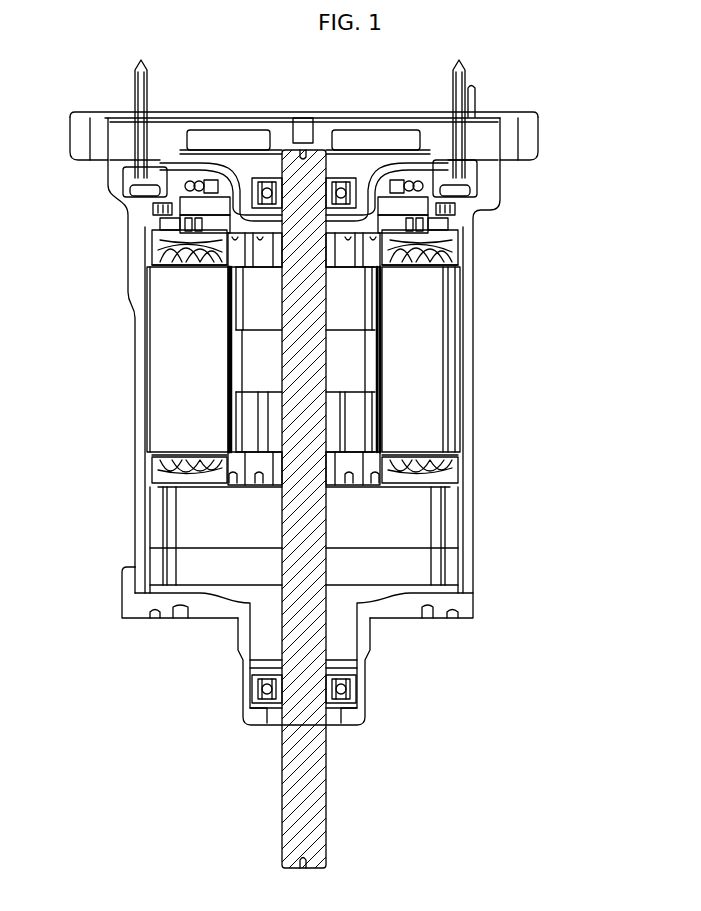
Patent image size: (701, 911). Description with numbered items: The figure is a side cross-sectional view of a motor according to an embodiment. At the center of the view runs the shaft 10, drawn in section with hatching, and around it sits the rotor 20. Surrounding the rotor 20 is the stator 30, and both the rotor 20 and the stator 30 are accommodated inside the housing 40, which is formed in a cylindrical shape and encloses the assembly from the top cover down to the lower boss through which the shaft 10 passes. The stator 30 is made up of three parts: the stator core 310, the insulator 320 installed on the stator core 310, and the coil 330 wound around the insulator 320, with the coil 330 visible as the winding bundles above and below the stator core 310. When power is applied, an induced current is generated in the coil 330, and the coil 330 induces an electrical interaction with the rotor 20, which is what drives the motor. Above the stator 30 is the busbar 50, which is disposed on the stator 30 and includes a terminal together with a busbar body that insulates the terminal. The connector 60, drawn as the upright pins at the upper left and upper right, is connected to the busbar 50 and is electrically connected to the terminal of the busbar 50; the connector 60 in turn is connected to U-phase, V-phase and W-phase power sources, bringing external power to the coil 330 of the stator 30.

The shaft 10 is at (341, 804).
The rotor 20 is at (356, 377).
The stator 30 is at (404, 356).
The housing 40 is at (125, 428).
The busbar 50 is at (463, 216).
The connector 60 is at (114, 189).
The stator core 310 is at (422, 357).
The insulator 320 is at (455, 263).
The coil 330 is at (608, 358).